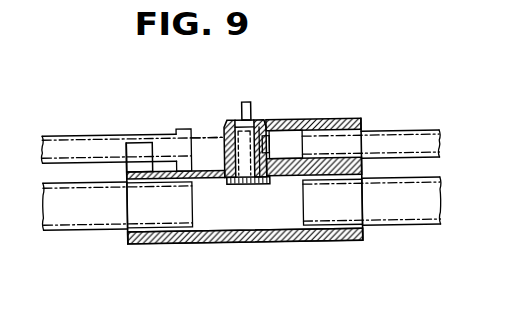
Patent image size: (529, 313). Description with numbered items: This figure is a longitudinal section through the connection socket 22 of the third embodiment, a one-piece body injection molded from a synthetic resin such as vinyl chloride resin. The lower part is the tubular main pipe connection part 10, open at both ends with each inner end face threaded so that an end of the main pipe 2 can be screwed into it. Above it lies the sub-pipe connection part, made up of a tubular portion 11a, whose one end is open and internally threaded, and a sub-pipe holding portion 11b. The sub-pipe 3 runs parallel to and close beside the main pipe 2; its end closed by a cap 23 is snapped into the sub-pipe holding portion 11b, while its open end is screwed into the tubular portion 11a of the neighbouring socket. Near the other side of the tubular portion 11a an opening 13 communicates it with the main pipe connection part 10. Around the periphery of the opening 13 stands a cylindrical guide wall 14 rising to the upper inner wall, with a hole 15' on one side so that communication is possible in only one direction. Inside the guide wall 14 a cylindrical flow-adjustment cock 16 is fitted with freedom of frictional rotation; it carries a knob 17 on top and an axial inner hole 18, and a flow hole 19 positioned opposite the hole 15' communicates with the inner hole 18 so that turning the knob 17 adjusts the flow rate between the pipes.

The main pipe 2 is at (74, 200).
The sub-pipe 3 is at (82, 142).
The main pipe connection part 10 is at (265, 220).
The tubular portion 11a is at (337, 120).
The sub-pipe holding portion 11b is at (140, 146).
The opening 13 is at (243, 163).
The cylindrical guide wall 14 is at (267, 130).
The hole 15' is at (294, 121).
The flow-adjustment cock 16 is at (257, 120).
The knob 17 is at (244, 111).
The hole 18 is at (258, 184).
The flow hole 19 is at (227, 150).
The connection socket 22 is at (218, 242).
The cap 23 is at (190, 146).